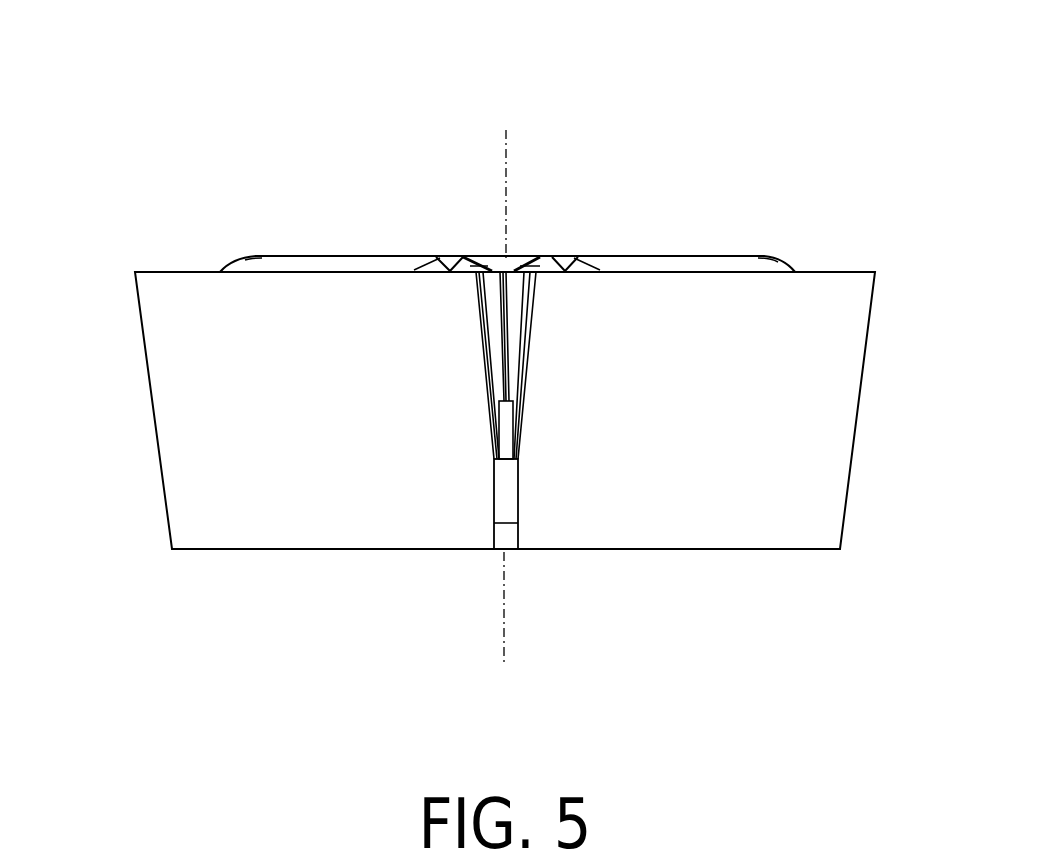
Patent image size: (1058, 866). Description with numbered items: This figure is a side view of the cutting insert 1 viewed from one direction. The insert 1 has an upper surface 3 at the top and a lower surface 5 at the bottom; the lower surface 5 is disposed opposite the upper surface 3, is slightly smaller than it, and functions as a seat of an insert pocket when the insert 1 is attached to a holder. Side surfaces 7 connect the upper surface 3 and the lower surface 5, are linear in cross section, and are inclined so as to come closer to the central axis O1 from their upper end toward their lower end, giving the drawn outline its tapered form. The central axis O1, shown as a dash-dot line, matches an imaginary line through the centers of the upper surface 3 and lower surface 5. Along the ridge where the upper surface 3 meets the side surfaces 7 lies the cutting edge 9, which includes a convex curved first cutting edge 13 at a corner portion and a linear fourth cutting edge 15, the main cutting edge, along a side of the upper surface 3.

The insert 1 is at (358, 116).
The upper surface 3 is at (262, 254).
The lower surface 5 is at (681, 552).
The side surfaces 7 is at (278, 410).
The cutting edge 9 is at (320, 256).
The first cutting edge 13 is at (498, 256).
The fourth cutting edge 15 is at (687, 272).
The central axis O1 is at (507, 403).